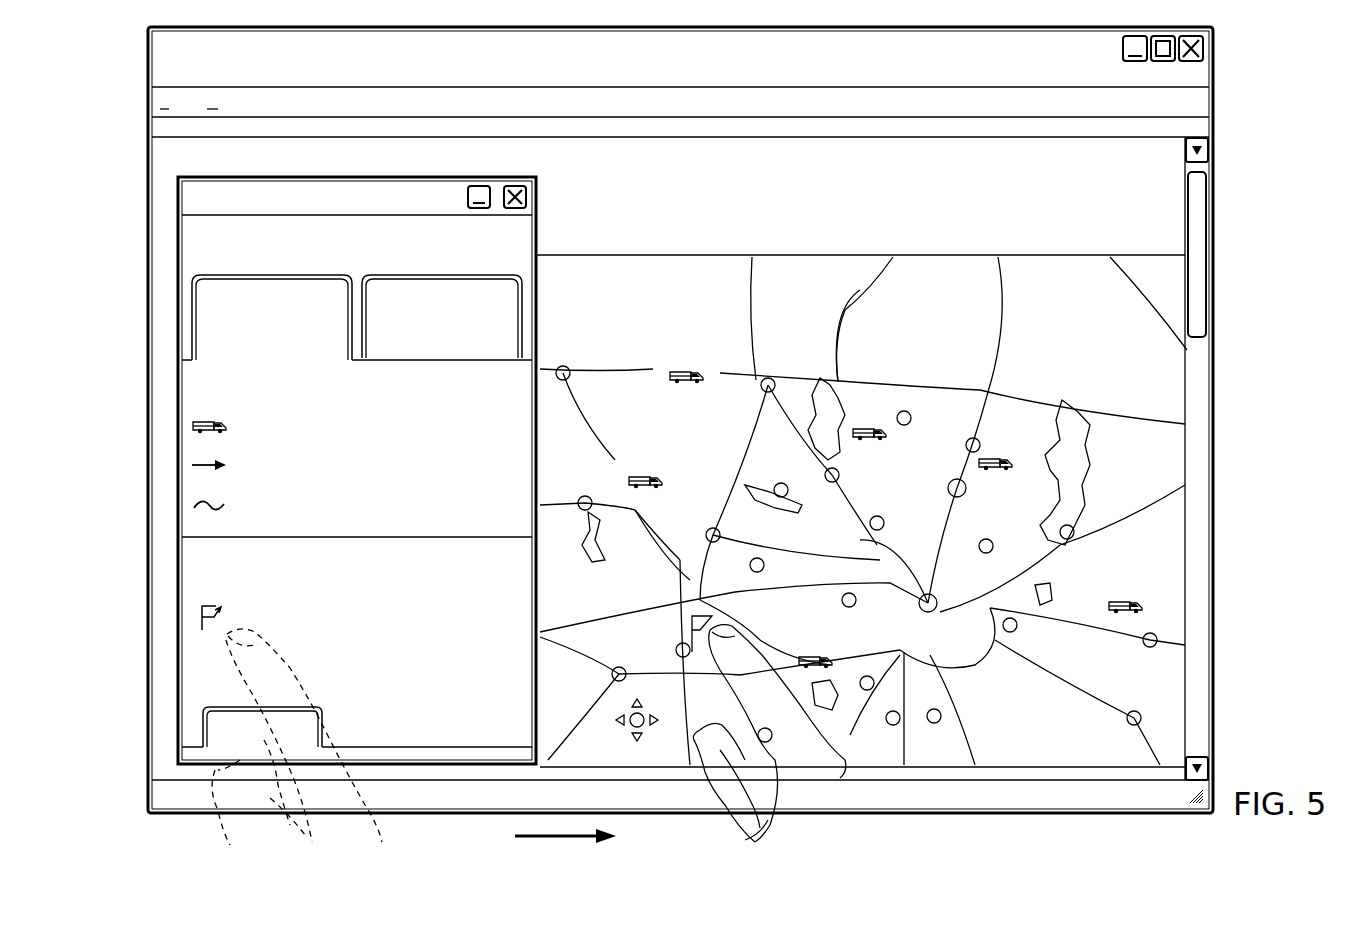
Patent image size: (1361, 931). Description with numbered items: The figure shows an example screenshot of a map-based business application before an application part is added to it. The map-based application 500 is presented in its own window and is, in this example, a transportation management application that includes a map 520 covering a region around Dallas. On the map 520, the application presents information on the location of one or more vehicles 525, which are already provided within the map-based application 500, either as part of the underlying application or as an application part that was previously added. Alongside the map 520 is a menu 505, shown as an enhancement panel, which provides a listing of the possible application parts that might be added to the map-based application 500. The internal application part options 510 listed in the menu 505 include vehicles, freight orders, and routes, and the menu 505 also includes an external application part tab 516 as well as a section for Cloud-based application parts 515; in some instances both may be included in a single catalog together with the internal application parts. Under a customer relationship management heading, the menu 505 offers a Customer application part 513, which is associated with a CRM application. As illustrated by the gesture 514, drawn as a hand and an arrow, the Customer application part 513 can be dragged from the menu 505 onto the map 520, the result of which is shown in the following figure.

The map-based application 500 is at (1214, 95).
The menu 505 is at (345, 198).
The internal application part options 510 is at (272, 276).
The external application part tab 516 is at (442, 276).
The Customer application part 513 is at (203, 634).
The Cloud-based application parts 515 is at (322, 732).
The gesture 514 is at (554, 832).
The map 520 is at (860, 256).
The vehicles 525 is at (686, 370).